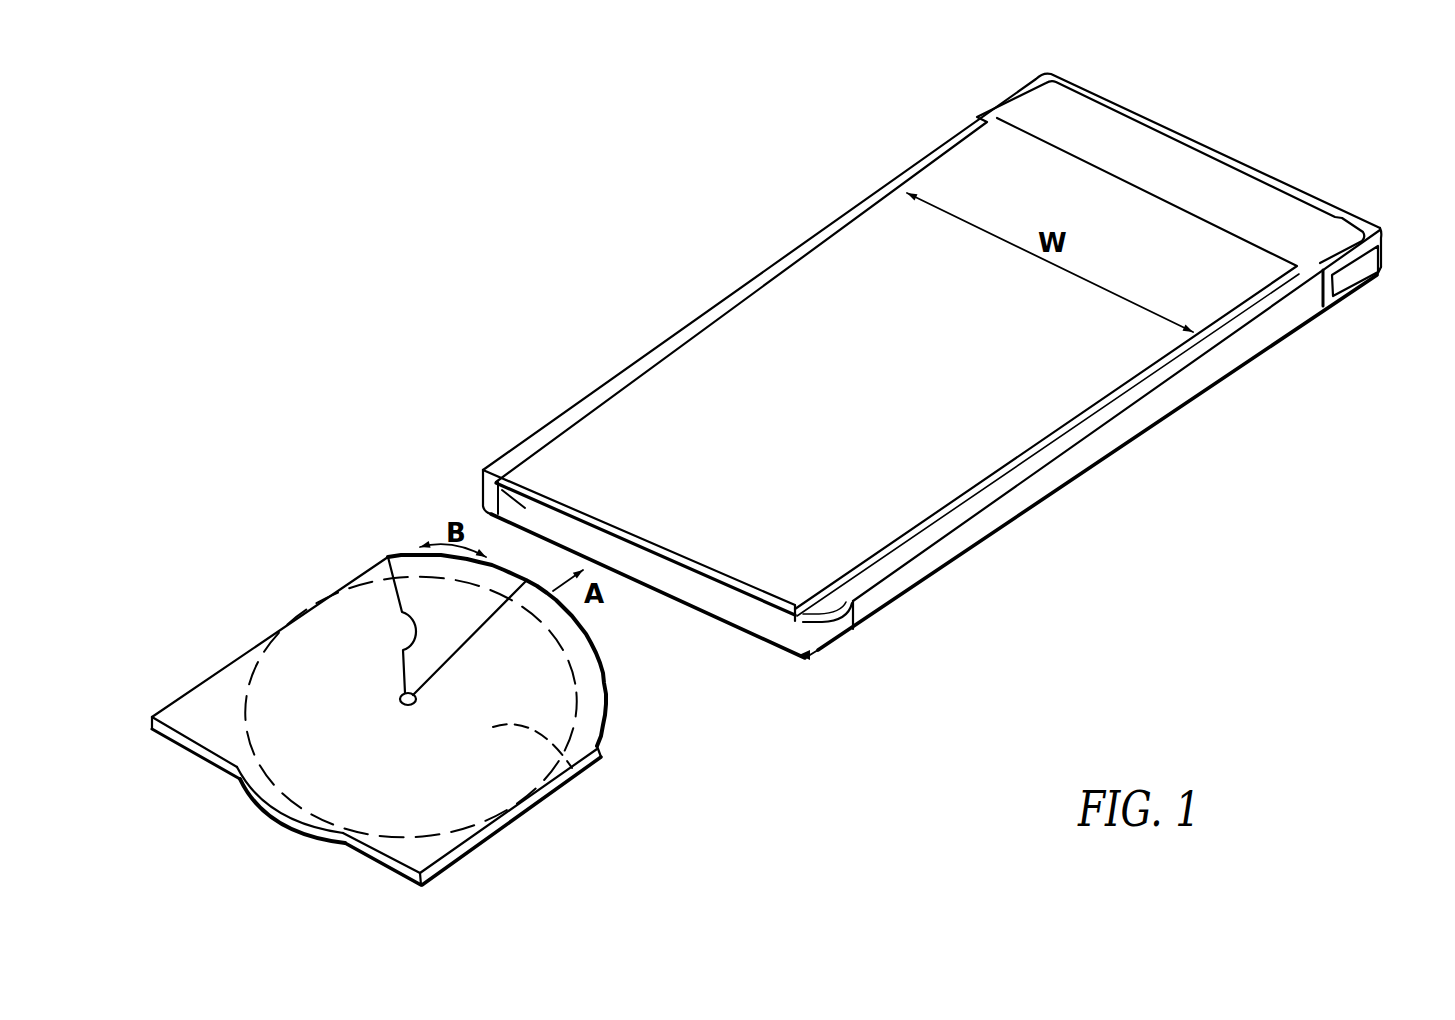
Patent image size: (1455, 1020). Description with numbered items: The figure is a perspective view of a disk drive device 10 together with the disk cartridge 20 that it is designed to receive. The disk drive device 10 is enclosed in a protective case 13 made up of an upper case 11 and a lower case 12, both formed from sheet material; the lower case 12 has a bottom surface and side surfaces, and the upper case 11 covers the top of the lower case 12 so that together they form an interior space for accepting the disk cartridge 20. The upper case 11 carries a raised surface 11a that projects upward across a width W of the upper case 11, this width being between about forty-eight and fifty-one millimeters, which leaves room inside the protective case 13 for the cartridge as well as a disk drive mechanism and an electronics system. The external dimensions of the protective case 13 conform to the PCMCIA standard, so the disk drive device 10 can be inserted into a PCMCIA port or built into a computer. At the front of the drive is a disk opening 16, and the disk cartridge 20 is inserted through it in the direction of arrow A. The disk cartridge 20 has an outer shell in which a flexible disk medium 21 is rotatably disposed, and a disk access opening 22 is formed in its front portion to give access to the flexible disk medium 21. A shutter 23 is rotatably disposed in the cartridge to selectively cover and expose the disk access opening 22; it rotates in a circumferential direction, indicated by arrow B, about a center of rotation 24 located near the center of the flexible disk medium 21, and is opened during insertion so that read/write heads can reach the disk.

The disk drive device 10 is at (932, 367).
The upper case 11 is at (1197, 283).
The raised surface 11a is at (1065, 380).
The lower case 12 is at (1289, 317).
The protective case 13 is at (1380, 320).
The disk opening 16 is at (718, 597).
The disk cartridge 20 is at (379, 720).
The flexible disk medium 21 is at (562, 745).
The disk access opening 22 is at (397, 653).
The shutter 23 is at (405, 553).
The center of rotation 24 is at (415, 707).